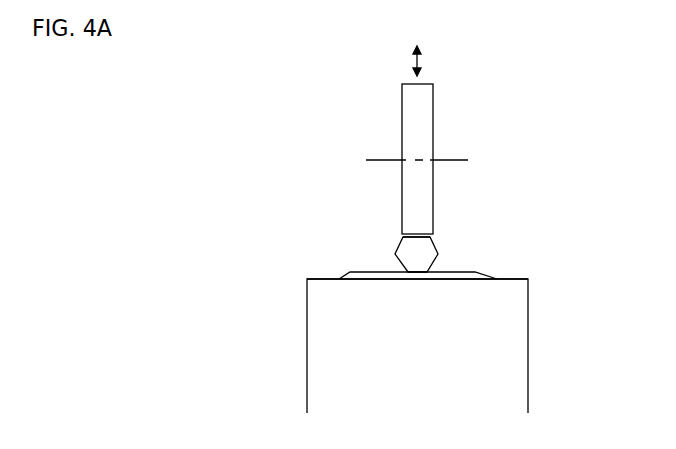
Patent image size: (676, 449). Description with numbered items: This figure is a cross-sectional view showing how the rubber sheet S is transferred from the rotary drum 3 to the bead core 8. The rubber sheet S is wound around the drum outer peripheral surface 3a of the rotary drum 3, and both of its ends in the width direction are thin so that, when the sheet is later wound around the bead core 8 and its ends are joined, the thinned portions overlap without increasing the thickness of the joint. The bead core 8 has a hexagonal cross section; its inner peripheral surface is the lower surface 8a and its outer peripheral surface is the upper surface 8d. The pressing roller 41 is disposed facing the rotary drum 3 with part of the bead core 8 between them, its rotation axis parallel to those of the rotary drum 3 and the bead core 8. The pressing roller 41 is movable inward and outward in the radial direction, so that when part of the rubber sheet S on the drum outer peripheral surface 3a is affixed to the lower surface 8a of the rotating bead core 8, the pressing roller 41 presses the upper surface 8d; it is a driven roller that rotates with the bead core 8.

The pressing roller 41 is at (434, 121).
The bead core 8 is at (417, 253).
The upper surface 8d is at (417, 233).
The lower surface 8a is at (417, 273).
The rubber sheet S is at (473, 270).
The drum outer peripheral surface 3a is at (515, 278).
The rotary drum 3 is at (533, 290).